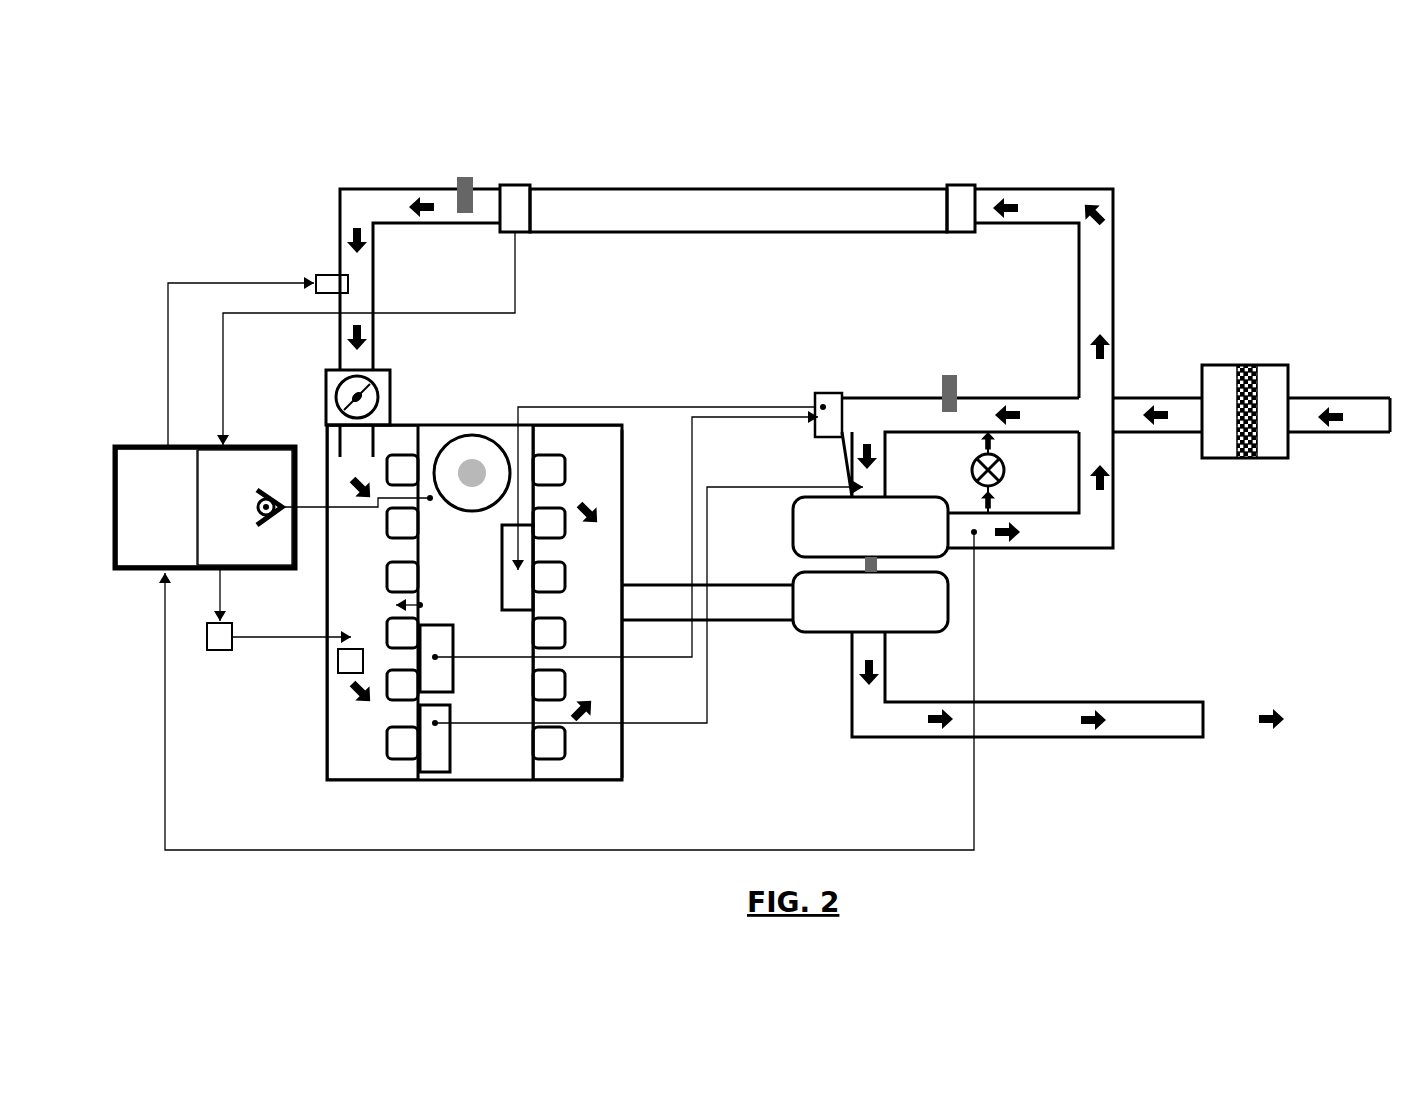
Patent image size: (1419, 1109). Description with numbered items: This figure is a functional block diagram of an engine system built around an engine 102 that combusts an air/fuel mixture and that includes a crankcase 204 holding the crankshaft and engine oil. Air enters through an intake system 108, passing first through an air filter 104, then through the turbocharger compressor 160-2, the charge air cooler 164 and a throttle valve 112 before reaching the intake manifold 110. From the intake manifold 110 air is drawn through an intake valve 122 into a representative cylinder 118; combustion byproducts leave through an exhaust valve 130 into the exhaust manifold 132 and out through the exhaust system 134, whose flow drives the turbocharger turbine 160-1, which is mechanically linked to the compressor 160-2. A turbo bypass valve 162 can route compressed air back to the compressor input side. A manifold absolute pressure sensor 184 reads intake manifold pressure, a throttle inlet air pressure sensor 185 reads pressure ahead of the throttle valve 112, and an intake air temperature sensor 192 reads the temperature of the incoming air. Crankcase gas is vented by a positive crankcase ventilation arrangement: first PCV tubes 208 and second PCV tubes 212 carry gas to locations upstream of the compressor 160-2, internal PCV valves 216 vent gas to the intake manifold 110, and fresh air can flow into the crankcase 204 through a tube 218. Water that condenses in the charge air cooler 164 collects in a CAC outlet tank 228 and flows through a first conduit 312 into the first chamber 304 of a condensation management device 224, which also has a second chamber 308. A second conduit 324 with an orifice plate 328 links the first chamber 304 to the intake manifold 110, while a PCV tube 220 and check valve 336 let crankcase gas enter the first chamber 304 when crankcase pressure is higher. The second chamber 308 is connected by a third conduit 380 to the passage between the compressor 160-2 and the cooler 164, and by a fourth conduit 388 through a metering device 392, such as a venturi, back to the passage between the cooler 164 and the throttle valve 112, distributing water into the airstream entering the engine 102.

The engine 102 is at (598, 333).
The air filter 104 is at (1250, 365).
The intake system 108 is at (1332, 523).
The intake manifold 110 is at (327, 717).
The throttle valve 112 is at (390, 395).
The cylinder 118 is at (480, 438).
The intake valve 122 is at (405, 455).
The exhaust valve 130 is at (565, 470).
The exhaust manifold 132 is at (622, 495).
The exhaust system 134 is at (1330, 600).
The turbocharger turbine 160-1 is at (820, 632).
The turbocharger compressor 160-2 is at (793, 530).
The turbo bypass valve 162 is at (972, 470).
The charge air cooler 164 is at (725, 189).
The manifold absolute pressure sensor 184 is at (338, 660).
The throttle inlet air pressure sensor 185 is at (465, 177).
The intake air temperature sensor 192 is at (950, 375).
The crankcase 204 is at (462, 425).
The first PCV tubes 208 is at (692, 457).
The second PCV tubes 212 is at (640, 732).
The internal PCV valves 216 is at (420, 605).
The tube 218 is at (680, 407).
The PCV tube 220 is at (340, 512).
The condensation management device 224 is at (252, 447).
The CAC outlet tank 228 is at (515, 185).
The first chamber 304 is at (245, 507).
The second chamber 308 is at (205, 507).
The first conduit 312 is at (420, 313).
The second conduit 324 is at (222, 598).
The orifice plate 328 is at (222, 652).
The check valve 336 is at (275, 483).
The third conduit 380 is at (580, 850).
The fourth conduit 388 is at (248, 283).
The metering device 392 is at (328, 275).